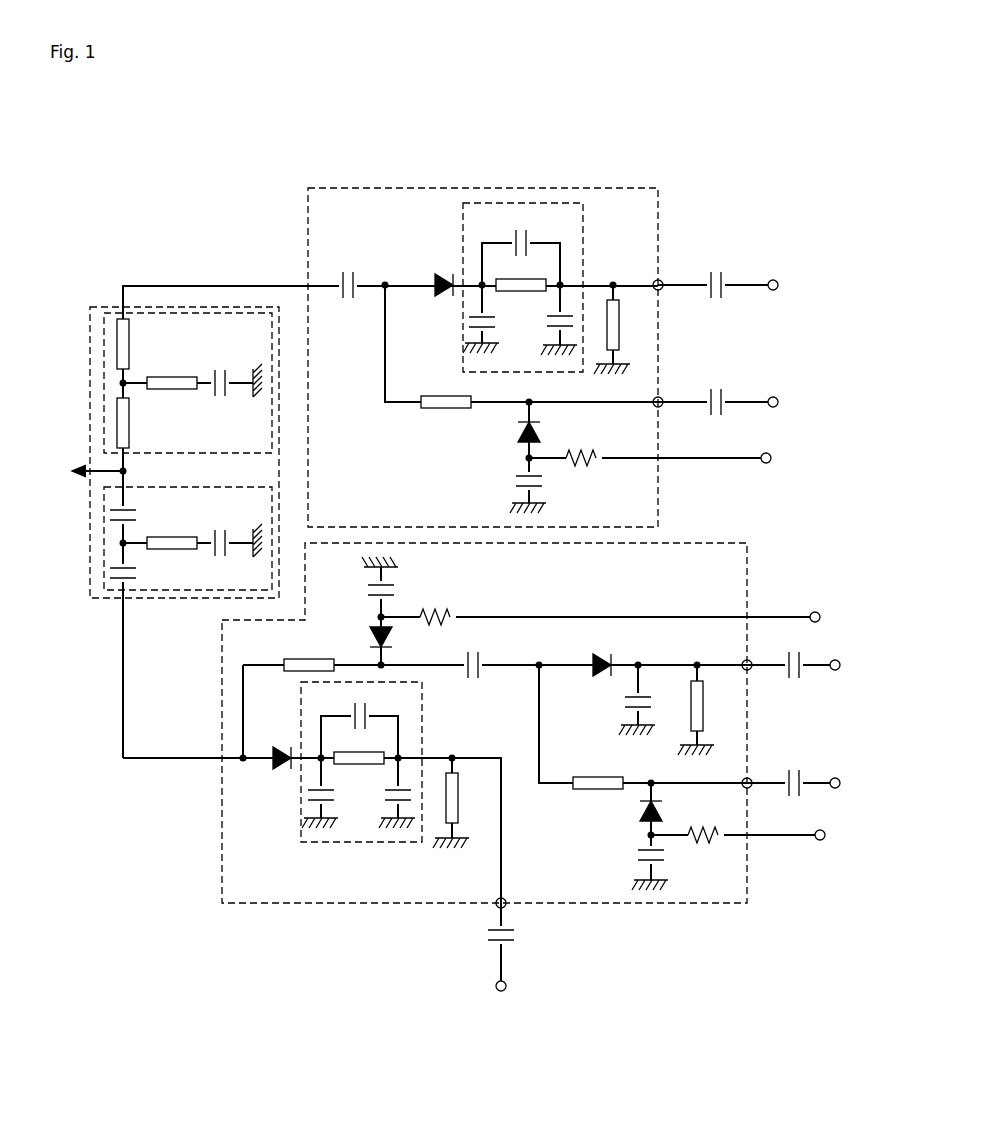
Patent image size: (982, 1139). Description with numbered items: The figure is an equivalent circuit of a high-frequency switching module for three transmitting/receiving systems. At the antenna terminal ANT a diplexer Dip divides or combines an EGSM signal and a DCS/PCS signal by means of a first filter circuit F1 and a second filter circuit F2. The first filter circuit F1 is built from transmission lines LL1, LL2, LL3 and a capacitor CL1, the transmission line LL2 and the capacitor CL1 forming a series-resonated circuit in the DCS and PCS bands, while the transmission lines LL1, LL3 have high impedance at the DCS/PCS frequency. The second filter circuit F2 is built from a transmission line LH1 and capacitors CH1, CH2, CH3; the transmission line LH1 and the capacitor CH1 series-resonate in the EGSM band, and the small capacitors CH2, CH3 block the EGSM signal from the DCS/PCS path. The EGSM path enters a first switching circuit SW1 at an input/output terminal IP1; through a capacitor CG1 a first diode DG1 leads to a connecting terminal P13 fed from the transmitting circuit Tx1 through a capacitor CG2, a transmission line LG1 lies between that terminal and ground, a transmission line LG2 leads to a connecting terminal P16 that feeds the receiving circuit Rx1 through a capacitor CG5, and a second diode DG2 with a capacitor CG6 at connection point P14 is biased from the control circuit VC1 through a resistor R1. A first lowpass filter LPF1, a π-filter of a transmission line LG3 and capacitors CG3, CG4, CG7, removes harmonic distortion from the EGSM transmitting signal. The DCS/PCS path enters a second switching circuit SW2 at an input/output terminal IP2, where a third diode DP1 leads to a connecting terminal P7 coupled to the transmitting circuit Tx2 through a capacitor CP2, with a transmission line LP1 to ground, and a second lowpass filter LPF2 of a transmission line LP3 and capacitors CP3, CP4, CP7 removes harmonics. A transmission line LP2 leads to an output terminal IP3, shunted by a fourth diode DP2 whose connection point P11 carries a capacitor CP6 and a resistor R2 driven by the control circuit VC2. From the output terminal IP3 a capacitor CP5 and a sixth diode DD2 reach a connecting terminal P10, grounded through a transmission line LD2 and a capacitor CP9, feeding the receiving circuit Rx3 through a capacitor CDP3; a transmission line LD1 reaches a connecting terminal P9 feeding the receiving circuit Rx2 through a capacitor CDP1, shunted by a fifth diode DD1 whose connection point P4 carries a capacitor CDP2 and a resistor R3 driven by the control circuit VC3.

The diplexer Dip is at (92, 304).
The first filter circuit F1 is at (102, 358).
The second filter circuit F2 is at (102, 548).
The first switching circuit SW1 is at (306, 238).
The second switching circuit SW2 is at (220, 784).
The first lowpass filter LPF1 is at (554, 203).
The second lowpass filter LPF2 is at (300, 840).
The antenna terminal ANT is at (78, 471).
The transmission line LL1 is at (140, 423).
The transmission line LL2 is at (172, 373).
The transmission line LL3 is at (140, 344).
The capacitor CL1 is at (234, 371).
The capacitor CH1 is at (234, 530).
The capacitor CH2 is at (136, 507).
The capacitor CH3 is at (164, 575).
The transmission line LH1 is at (172, 533).
The capacitor CG1 is at (346, 275).
The capacitor CG2 is at (716, 297).
The capacitor CG3 is at (541, 333).
The capacitor CG4 is at (462, 333).
The capacitor CG5 is at (716, 412).
The capacitor CG6 is at (512, 492).
The capacitor CG7 is at (519, 235).
The first diode DG1 is at (438, 273).
The second diode DG2 is at (509, 432).
The first inductance element LG1 is at (624, 337).
The second inductance element LG2 is at (446, 393).
The transmission line LG3 is at (521, 275).
The resistor R1 is at (584, 448).
The resistor R2 is at (438, 607).
The resistor R3 is at (706, 827).
The capacitor CP2 is at (485, 937).
The capacitor CP3 is at (380, 806).
The capacitor CP4 is at (300, 806).
The capacitor CP5 is at (470, 657).
The capacitor CP6 is at (363, 578).
The capacitor CP7 is at (357, 708).
The capacitor CP9 is at (621, 714).
The third diode DP1 is at (274, 748).
The fourth diode DP2 is at (360, 638).
The third inductance element LP1 is at (462, 810).
The fourth inductance element LP2 is at (309, 655).
The transmission line LP3 is at (359, 748).
The fifth inductance element LD1 is at (598, 773).
The sixth inductance element LD2 is at (708, 718).
The fifth diode DD1 is at (630, 810).
The sixth diode DD2 is at (600, 655).
The capacitor CDP1 is at (792, 791).
The capacitor CDP2 is at (625, 868).
The capacitor CDP3 is at (792, 673).
The input/output terminal IP1 is at (389, 275).
The input/output terminal IP2 is at (245, 769).
The output terminal IP3 is at (543, 654).
The connection point P4 is at (641, 835).
The connecting terminal P7 is at (492, 910).
The connecting terminal P9 is at (757, 774).
The connecting terminal P10 is at (763, 656).
The connection point P11 is at (367, 616).
The connecting terminal P13 is at (674, 277).
The connection point P14 is at (515, 458).
The connecting terminal P16 is at (674, 394).
The transmitting circuit Tx1 is at (790, 283).
The receiving circuit Rx1 is at (791, 393).
The transmitting circuit Tx2 is at (557, 984).
The receiving circuit Rx2 is at (849, 774).
The receiving circuit Rx3 is at (849, 656).
The control circuit VC1 is at (785, 458).
The control circuit VC2 is at (834, 617).
The control circuit VC3 is at (839, 836).